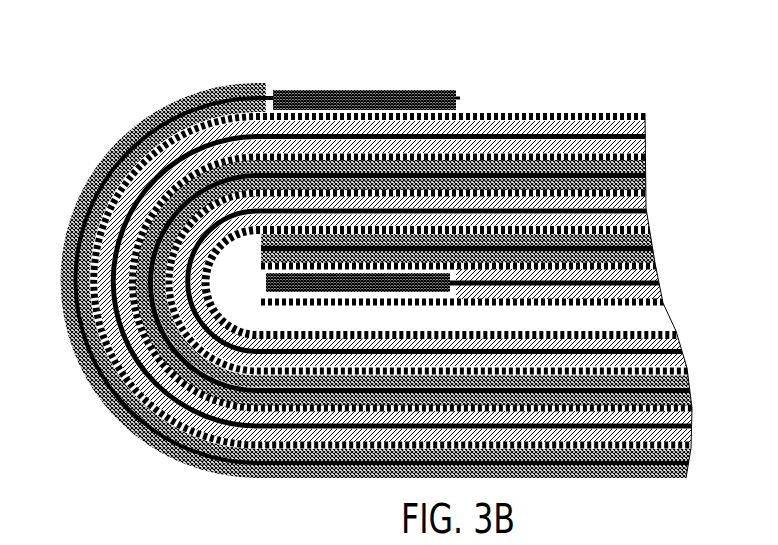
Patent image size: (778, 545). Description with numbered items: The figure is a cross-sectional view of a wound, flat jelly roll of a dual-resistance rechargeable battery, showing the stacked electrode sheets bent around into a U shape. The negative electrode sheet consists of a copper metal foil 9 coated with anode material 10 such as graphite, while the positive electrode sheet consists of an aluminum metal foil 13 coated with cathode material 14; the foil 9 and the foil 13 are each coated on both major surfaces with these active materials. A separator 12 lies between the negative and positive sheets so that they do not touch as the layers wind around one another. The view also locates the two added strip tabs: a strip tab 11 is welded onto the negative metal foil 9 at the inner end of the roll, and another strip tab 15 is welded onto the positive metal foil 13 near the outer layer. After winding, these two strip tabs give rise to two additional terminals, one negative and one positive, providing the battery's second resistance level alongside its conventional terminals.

The metal foil 9 is at (637, 129).
The anode material 10 is at (637, 122).
The strip tab 11 is at (252, 273).
The separator 12 is at (638, 107).
The metal foil 13 is at (637, 170).
The cathode material 14 is at (637, 153).
The strip tab 15 is at (431, 82).